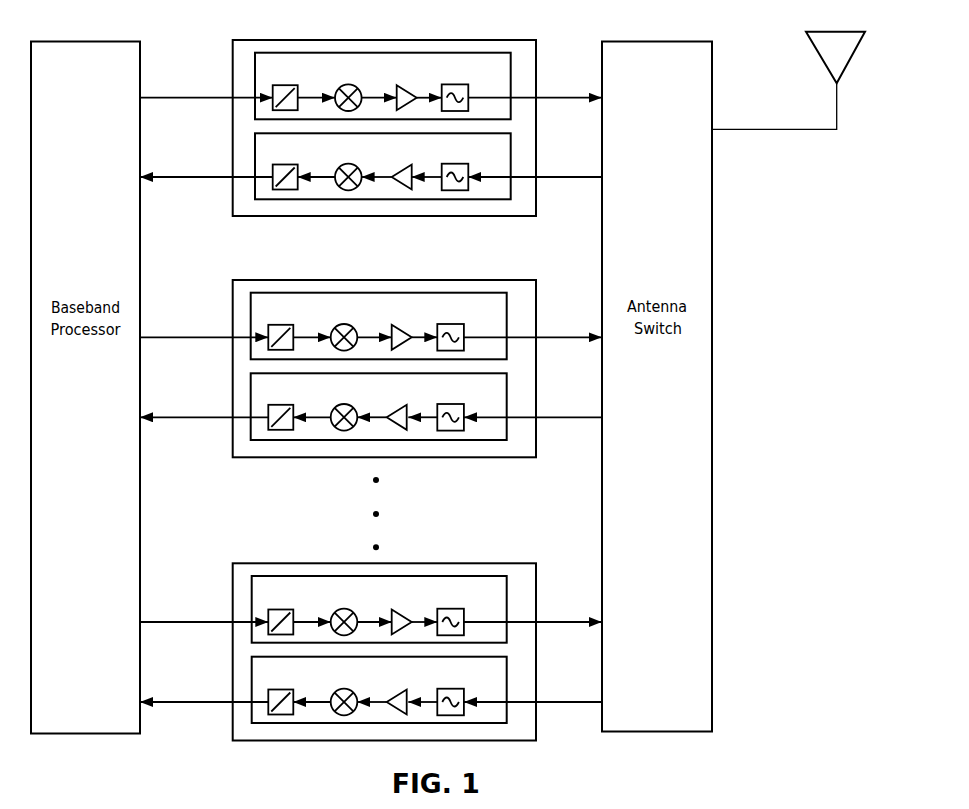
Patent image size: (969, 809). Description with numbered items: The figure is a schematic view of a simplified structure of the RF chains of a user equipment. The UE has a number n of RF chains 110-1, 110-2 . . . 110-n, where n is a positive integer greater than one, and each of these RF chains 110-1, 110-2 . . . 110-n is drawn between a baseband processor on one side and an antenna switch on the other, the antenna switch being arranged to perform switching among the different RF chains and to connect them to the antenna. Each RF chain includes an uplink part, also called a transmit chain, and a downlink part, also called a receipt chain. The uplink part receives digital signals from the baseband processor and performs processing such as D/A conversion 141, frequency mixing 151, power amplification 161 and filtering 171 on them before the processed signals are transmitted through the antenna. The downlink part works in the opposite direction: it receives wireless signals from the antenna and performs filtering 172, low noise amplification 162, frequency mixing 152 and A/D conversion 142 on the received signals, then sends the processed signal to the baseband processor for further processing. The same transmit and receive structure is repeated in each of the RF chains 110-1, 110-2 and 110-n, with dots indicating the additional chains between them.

The RF chain 110-1 is at (371, 114).
The RF chain 110-2 is at (451, 280).
The RF chain 110-n is at (452, 563).
The D/A conversion 141 is at (285, 84).
The A/D conversion 142 is at (285, 164).
The frequency mixing 151 is at (347, 84).
The frequency mixing 152 is at (347, 163).
The power amplification 161 is at (404, 84).
The low noise amplification 162 is at (412, 165).
The filtering 171 is at (455, 84).
The filtering 172 is at (452, 163).